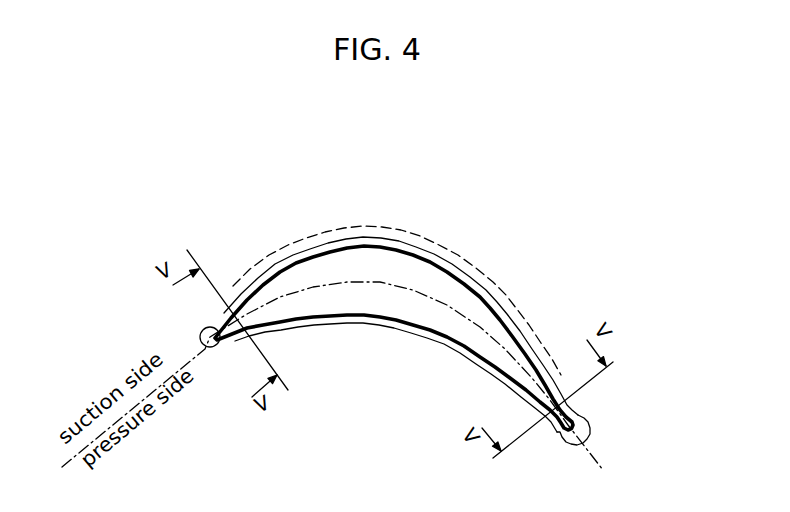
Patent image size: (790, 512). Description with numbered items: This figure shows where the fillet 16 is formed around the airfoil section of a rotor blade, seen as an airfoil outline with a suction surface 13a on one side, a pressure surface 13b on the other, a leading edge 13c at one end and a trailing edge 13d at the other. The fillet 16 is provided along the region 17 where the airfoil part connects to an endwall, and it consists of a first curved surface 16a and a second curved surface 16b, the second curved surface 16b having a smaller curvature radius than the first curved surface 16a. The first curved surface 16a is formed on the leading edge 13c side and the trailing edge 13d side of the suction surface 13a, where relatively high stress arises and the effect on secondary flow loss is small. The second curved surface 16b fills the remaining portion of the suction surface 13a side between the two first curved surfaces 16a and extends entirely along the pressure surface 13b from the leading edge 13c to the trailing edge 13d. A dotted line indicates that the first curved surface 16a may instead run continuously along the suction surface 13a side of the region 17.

The suction surface 13a is at (450, 278).
The pressure surface 13b is at (393, 326).
The leading edge 13c is at (203, 338).
The trailing edge 13d is at (578, 433).
The fillet 16 is at (458, 297).
The first curved surface 16a is at (218, 318).
The second curved surface 16b is at (297, 240).
The region 17 is at (346, 238).